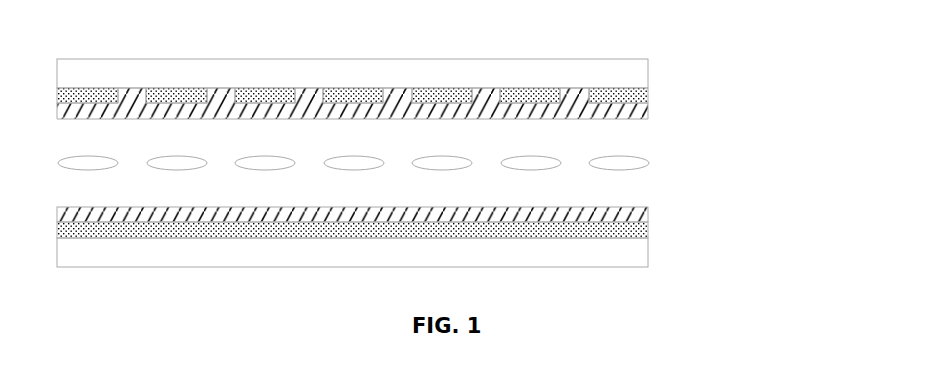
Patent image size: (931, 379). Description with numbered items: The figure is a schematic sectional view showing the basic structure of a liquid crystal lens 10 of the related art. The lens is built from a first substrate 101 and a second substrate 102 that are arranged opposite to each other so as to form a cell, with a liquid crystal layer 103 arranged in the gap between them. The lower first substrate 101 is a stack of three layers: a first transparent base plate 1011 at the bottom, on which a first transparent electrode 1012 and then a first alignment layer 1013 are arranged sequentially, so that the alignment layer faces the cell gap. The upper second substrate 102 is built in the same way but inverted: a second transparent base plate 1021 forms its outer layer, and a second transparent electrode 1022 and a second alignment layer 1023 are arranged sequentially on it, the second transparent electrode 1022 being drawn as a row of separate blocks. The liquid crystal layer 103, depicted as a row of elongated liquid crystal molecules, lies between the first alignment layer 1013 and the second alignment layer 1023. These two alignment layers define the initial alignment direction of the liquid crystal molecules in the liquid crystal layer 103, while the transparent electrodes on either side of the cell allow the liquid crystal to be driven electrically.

The liquid crystal lens 10 is at (293, 38).
The first substrate 101 is at (437, 234).
The first transparent base plate 1011 is at (648, 253).
The first transparent electrode 1012 is at (648, 230).
The first alignment layer 1013 is at (648, 214).
The second substrate 102 is at (437, 92).
The second transparent base plate 1021 is at (648, 68).
The second transparent electrode 1022 is at (648, 95).
The second alignment layer 1023 is at (648, 112).
The liquid crystal layer 103 is at (620, 164).